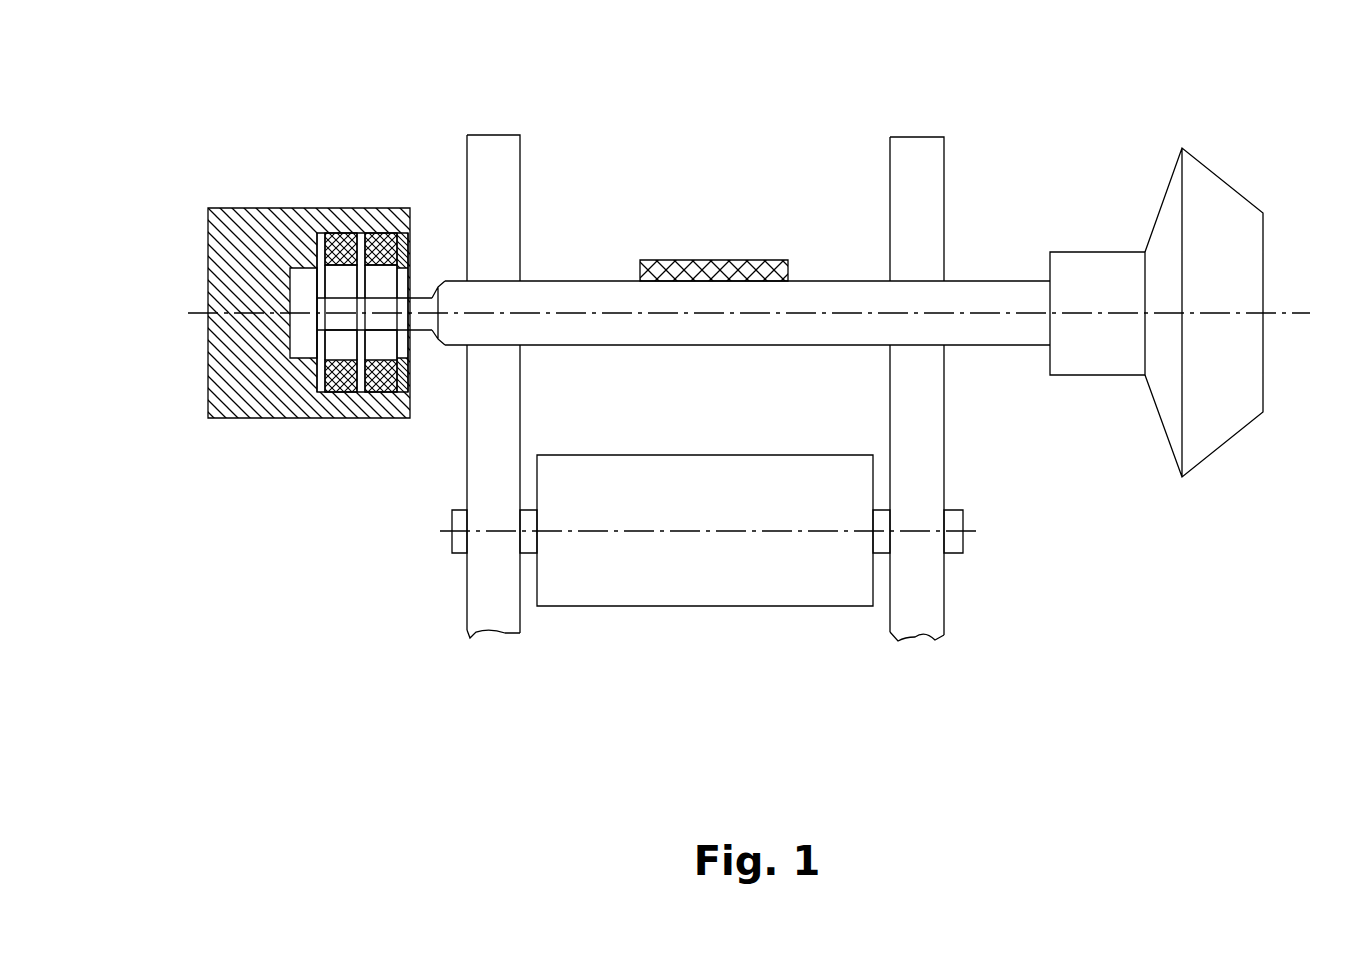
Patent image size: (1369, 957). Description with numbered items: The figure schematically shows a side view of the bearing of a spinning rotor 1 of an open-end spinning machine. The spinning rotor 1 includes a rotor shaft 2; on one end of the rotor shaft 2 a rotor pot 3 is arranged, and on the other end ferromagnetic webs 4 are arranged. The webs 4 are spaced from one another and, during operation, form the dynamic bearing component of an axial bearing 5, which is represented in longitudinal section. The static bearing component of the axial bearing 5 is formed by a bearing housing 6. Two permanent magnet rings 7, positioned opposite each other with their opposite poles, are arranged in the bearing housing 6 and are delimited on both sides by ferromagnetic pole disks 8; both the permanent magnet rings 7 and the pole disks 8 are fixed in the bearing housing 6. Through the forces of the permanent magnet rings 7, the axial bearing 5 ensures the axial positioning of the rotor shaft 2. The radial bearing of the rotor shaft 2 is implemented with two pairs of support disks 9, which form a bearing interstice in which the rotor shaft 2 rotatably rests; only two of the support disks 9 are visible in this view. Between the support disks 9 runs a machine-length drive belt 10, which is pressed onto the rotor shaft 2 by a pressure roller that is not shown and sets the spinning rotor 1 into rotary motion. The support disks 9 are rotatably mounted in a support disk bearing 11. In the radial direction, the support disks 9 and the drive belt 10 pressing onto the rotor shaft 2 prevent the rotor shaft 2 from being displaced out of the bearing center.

The spinning rotor 1 is at (1095, 208).
The rotor shaft 2 is at (573, 287).
The rotor pot 3 is at (1225, 208).
The ferromagnetic webs 4 is at (313, 333).
The axial bearing 5 is at (263, 172).
The bearing housing 6 is at (232, 393).
The permanent magnet rings 7 is at (338, 232).
The ferromagnetic pole disks 8 is at (316, 233).
The support disks 9 is at (500, 167).
The drive belt 10 is at (705, 262).
The support disk bearing 11 is at (682, 588).